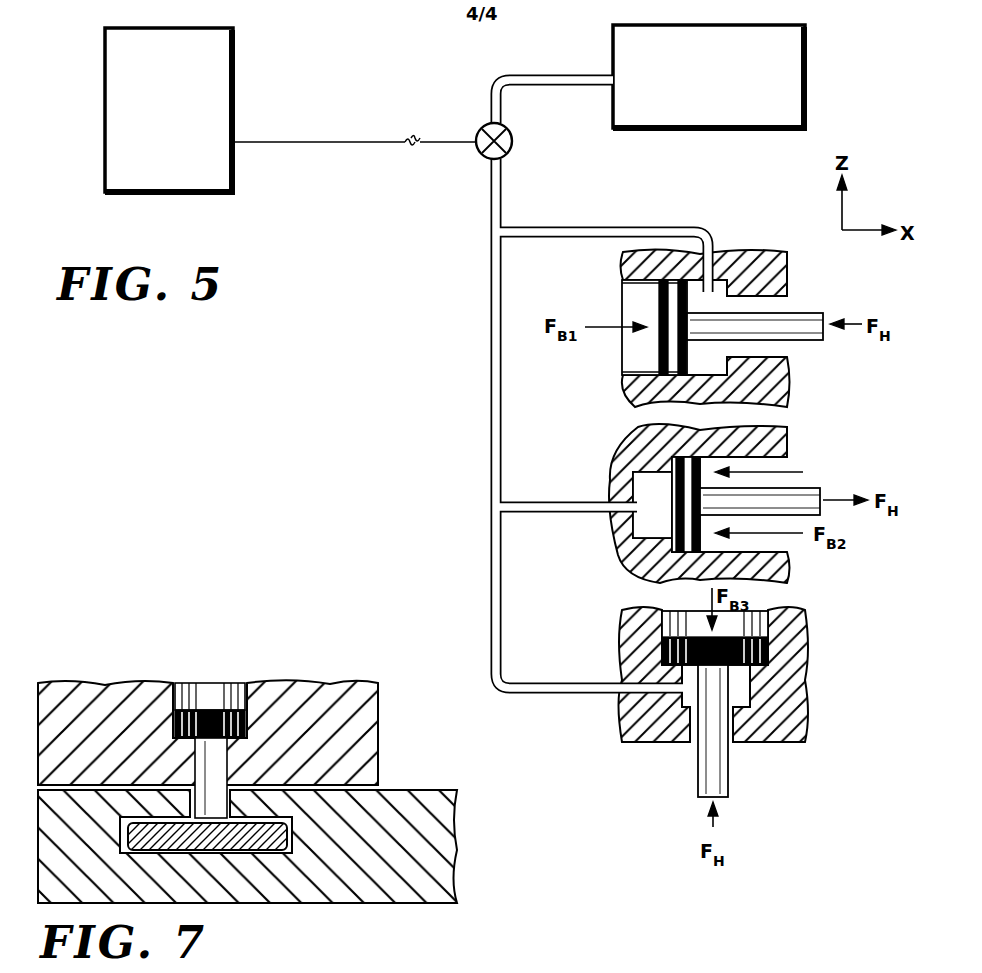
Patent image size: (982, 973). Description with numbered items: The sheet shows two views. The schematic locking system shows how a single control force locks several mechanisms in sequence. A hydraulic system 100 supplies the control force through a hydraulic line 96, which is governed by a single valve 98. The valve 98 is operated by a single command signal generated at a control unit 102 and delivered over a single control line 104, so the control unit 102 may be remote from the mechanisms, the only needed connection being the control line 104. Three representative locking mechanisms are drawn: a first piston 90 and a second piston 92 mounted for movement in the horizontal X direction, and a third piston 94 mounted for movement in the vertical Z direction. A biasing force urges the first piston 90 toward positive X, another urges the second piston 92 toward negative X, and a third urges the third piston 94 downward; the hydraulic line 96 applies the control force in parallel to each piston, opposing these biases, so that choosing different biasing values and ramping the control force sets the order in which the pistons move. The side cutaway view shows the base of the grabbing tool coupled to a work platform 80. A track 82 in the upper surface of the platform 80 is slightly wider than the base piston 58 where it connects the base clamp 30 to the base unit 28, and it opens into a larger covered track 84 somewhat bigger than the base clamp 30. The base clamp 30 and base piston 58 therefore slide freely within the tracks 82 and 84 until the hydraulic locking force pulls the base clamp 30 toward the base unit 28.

In FIG. 5, the control unit 102 is at (186, 28).
In FIG. 5, the control line 104 is at (357, 144).
In FIG. 5, the hydraulic system 100 is at (805, 46).
In FIG. 5, the valve 98 is at (536, 118).
In FIG. 5, the hydraulic line 96 is at (489, 190).
In FIG. 5, the second piston 92 is at (813, 312).
In FIG. 5, the first piston 90 is at (813, 484).
In FIG. 5, the third piston 94 is at (728, 776).
In FIG. 7, the base unit 28 is at (378, 718).
In FIG. 7, the base piston 58 is at (214, 696).
In FIG. 7, the track 82 is at (228, 781).
In FIG. 7, the work platform 80 is at (457, 833).
In FIG. 7, the covered track 84 is at (120, 832).
In FIG. 7, the base clamp 30 is at (292, 820).